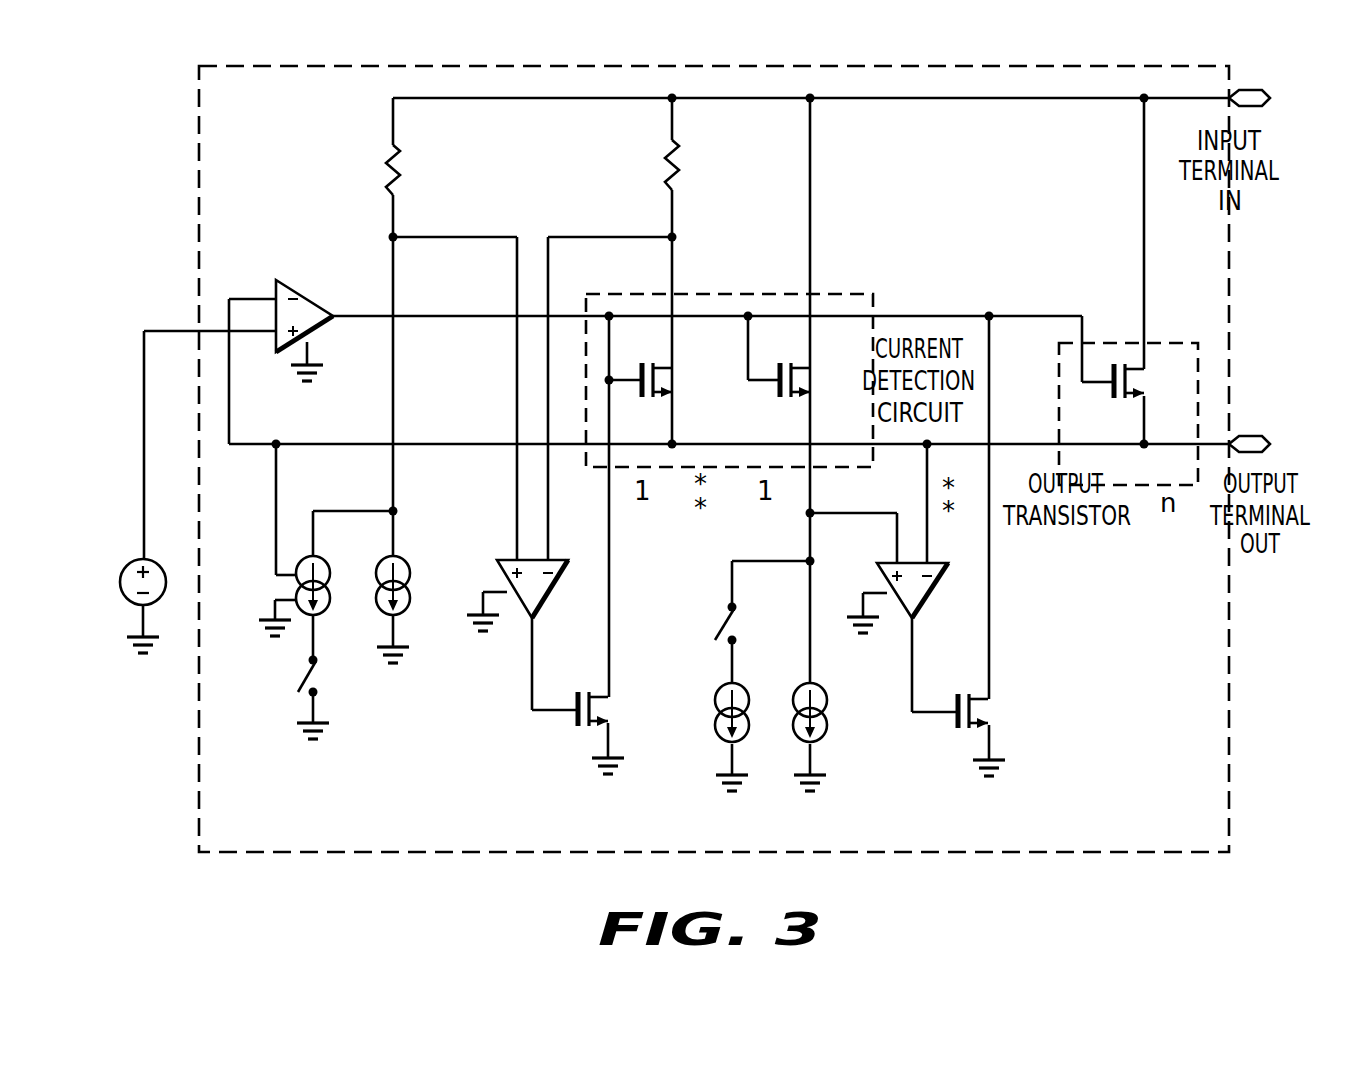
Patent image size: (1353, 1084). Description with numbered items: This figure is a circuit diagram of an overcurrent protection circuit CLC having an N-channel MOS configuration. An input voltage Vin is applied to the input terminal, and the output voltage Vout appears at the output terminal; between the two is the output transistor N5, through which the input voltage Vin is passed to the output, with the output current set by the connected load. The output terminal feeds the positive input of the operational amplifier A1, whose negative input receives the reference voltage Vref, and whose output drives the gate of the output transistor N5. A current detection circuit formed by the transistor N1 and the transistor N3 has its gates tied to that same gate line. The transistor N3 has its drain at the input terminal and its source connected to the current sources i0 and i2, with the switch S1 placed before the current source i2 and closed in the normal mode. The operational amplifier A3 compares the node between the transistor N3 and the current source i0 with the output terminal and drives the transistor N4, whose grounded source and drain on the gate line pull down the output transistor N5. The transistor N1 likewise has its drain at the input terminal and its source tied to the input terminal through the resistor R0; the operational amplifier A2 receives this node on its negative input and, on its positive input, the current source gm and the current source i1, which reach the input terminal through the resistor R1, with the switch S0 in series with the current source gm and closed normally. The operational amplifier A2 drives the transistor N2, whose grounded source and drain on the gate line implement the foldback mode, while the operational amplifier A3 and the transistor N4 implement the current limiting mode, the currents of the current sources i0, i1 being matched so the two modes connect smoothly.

The overcurrent protection circuit CLC is at (714, 459).
The input voltage Vin is at (1276, 99).
The output voltage Vout is at (1283, 445).
The reference voltage Vref is at (114, 569).
The resistor R1 is at (376, 170).
The resistor R0 is at (653, 165).
The operational amplifier A1 is at (309, 310).
The operational amplifier A2 is at (513, 581).
The operational amplifier A3 is at (892, 583).
The transistor N1 is at (675, 380).
The transistor N2 is at (611, 709).
The transistor N3 is at (815, 380).
The transistor N4 is at (991, 711).
The output transistor N5 is at (1148, 381).
The switch S0 is at (324, 676).
The switch S1 is at (741, 625).
The current source i0 is at (825, 712).
The current source i1 is at (407, 585).
The current source i2 is at (716, 712).